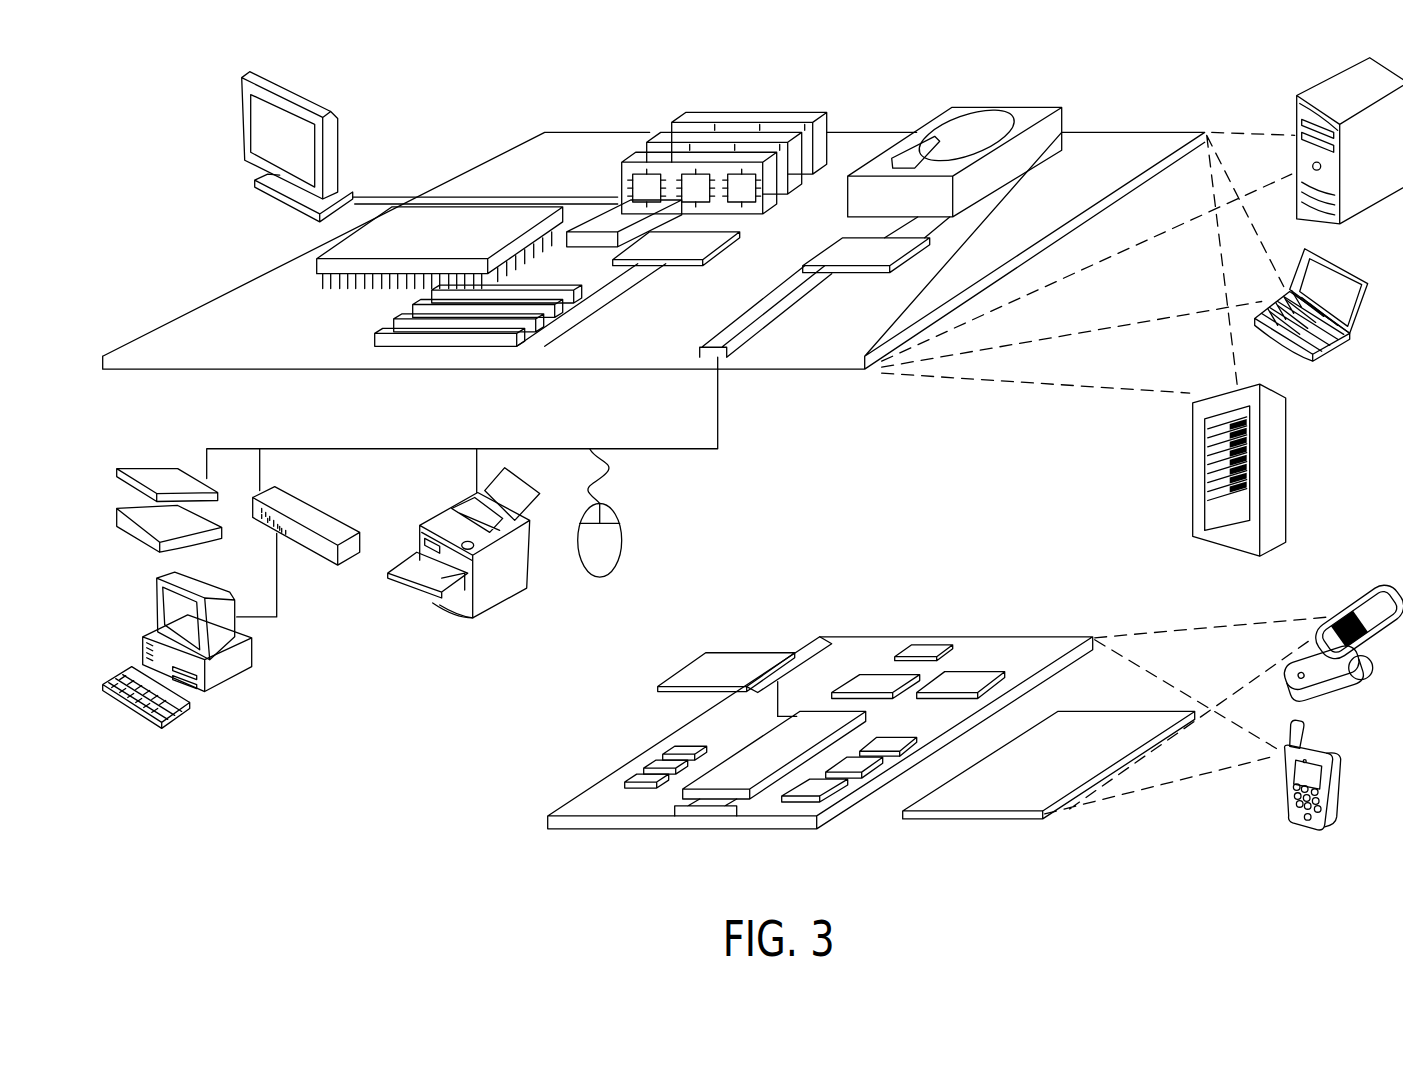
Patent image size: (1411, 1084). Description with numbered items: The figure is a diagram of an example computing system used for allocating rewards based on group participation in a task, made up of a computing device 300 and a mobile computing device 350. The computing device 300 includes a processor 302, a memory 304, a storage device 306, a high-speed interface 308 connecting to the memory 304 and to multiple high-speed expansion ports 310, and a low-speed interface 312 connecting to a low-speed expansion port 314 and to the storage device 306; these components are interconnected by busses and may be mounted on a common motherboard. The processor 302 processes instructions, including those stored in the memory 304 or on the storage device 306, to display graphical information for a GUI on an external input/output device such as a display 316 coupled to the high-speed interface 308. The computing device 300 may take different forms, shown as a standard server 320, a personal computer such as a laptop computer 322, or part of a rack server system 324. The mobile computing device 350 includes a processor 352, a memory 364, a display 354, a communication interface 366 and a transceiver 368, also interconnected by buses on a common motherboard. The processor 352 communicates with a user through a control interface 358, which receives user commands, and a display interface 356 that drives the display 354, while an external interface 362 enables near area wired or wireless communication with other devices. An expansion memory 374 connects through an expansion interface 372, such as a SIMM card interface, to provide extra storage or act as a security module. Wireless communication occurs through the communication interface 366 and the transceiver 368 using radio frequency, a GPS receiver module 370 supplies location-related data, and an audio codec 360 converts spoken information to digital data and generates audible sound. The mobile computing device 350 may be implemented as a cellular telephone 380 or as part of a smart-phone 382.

The computing device 300 is at (178, 98).
The processor 302 is at (315, 262).
The memory 304 is at (693, 120).
The storage device 306 is at (950, 106).
The high-speed interface 308 is at (650, 242).
The high-speed expansion ports 310 is at (385, 326).
The low-speed interface 312 is at (843, 246).
The low-speed expansion port 314 is at (722, 362).
The display 316 is at (303, 92).
The standard server 320 is at (1297, 112).
The laptop computer 322 is at (1340, 345).
The rack server system 324 is at (1193, 498).
The mobile computing device 350 is at (521, 789).
The processor 352 is at (747, 782).
The display 354 is at (1012, 805).
The display interface 356 is at (812, 797).
The control interface 358 is at (858, 772).
The audio codec 360 is at (883, 740).
The external interface 362 is at (706, 820).
The memory 364 is at (650, 778).
The communication interface 366 is at (877, 683).
The transceiver 368 is at (955, 683).
The GPS receiver module 370 is at (930, 647).
The expansion interface 372 is at (779, 653).
The expansion memory 374 is at (706, 656).
The cellular telephone 380 is at (1328, 558).
The smart-phone 382 is at (1287, 792).